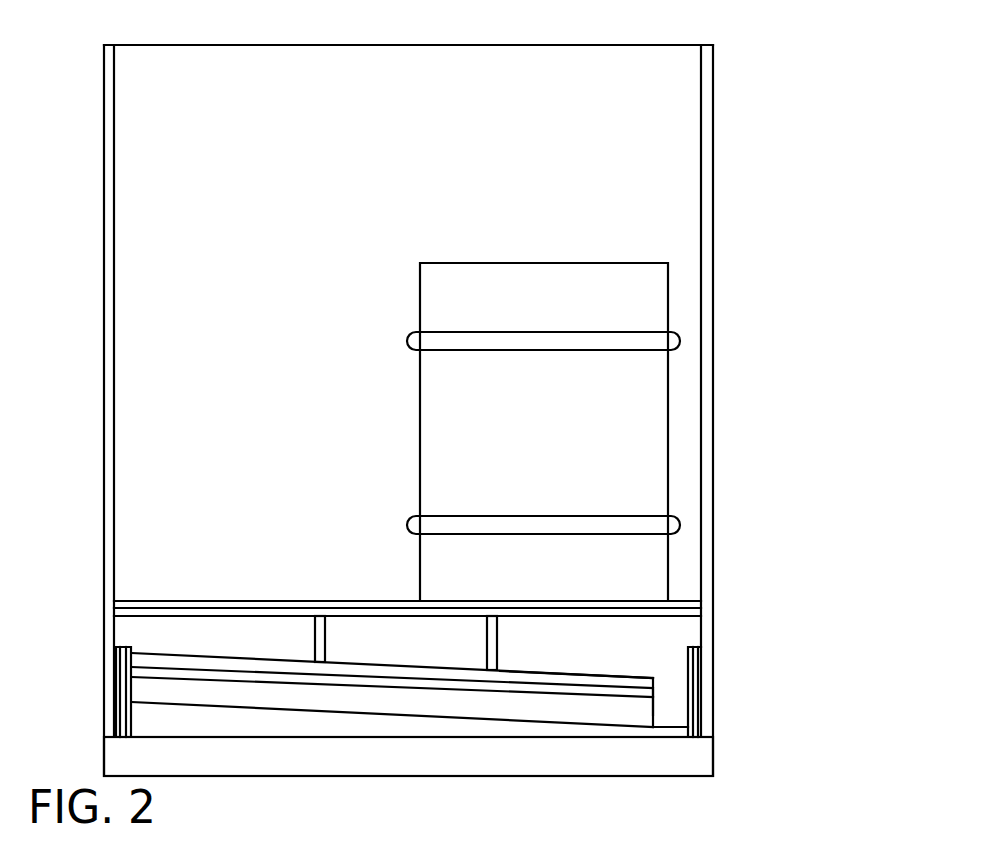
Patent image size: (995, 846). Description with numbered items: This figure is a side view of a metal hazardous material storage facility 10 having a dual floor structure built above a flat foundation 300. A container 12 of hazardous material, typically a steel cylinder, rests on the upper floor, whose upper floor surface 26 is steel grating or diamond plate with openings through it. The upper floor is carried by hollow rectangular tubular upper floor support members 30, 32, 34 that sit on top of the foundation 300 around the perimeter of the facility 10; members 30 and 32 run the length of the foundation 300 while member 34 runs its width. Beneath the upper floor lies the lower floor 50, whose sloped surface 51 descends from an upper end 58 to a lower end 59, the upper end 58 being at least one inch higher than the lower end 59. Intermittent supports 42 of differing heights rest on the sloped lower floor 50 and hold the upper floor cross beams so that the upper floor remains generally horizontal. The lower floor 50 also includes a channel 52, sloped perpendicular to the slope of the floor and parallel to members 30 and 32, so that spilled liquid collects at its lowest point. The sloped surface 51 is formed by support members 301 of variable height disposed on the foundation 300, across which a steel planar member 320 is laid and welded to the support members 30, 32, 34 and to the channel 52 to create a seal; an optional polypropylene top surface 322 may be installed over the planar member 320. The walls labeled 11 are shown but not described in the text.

The hazardous material storage facility 10 is at (122, 28).
The side wall 11 is at (99, 165).
The container 12 is at (668, 458).
The upper floor surface 26 is at (335, 601).
The upper floor support member 30 is at (110, 708).
The upper floor support member 32 is at (703, 700).
The upper floor support member 34 is at (438, 603).
The intermittent support 42 is at (325, 633).
The lower floor 50 is at (456, 675).
The sloped surface 51 is at (203, 655).
The channel 52 is at (655, 728).
The upper end 58 is at (153, 667).
The lower end 59 is at (627, 710).
The foundation 300 is at (463, 755).
The support member 301 is at (667, 698).
The planar member 320 is at (617, 678).
The polypropylene top surface 322 is at (577, 657).